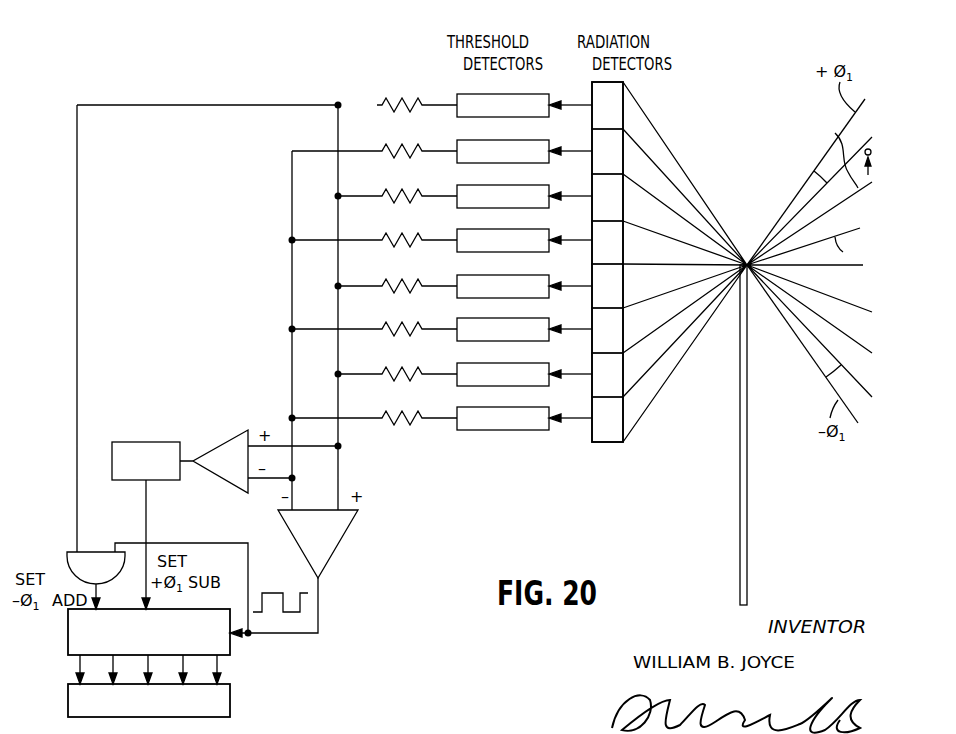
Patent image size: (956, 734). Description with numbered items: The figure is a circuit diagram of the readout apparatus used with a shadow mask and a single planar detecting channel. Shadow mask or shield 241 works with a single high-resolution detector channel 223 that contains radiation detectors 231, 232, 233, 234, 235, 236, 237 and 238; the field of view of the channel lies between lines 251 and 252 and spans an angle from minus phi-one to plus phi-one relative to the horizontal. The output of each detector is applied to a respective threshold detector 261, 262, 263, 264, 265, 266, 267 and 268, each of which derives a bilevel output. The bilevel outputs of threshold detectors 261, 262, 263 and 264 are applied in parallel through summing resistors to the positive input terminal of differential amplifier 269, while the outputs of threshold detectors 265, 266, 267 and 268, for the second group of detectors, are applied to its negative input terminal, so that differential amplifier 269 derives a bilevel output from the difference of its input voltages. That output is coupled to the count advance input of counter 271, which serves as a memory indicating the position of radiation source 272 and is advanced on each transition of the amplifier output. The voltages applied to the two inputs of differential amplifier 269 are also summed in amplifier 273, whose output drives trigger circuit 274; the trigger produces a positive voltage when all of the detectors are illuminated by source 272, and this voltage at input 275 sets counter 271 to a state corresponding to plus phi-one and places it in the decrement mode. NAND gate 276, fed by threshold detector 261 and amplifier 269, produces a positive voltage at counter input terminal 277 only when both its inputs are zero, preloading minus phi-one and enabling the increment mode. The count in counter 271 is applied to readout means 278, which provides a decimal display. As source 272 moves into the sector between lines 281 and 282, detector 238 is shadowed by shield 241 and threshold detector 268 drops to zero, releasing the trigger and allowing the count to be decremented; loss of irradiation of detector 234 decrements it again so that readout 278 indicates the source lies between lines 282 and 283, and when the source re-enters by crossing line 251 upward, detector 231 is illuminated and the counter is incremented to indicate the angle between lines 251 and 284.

The detector channel 223 is at (625, 83).
The radiation detector 231 is at (597, 118).
The radiation detector 232 is at (597, 210).
The radiation detector 233 is at (597, 297).
The radiation detector 234 is at (597, 386).
The radiation detector 235 is at (597, 163).
The radiation detector 236 is at (597, 253).
The radiation detector 237 is at (597, 342).
The radiation detector 238 is at (597, 431).
The shadow mask 241 is at (748, 493).
The field of view line 251 is at (805, 345).
The field of view line 252 is at (800, 190).
The threshold detector 261 is at (468, 99).
The threshold detector 262 is at (468, 190).
The threshold detector 263 is at (468, 280).
The threshold detector 264 is at (468, 368).
The threshold detector 265 is at (468, 145).
The threshold detector 266 is at (468, 234).
The threshold detector 267 is at (468, 323).
The threshold detector 268 is at (468, 412).
The differential amplifier 269 is at (345, 552).
The counter 271 is at (77, 643).
The radiation source 272 is at (868, 175).
The amplifier 273 is at (240, 440).
The trigger circuit 274 is at (155, 440).
The counter input 275 is at (146, 602).
The NAND gate 276 is at (70, 551).
The counter input terminal 277 is at (92, 603).
The readout means 278 is at (177, 686).
The sector line 281 is at (815, 167).
The sector line 282 is at (834, 155).
The sector line 283 is at (855, 249).
The sector line 284 is at (825, 378).